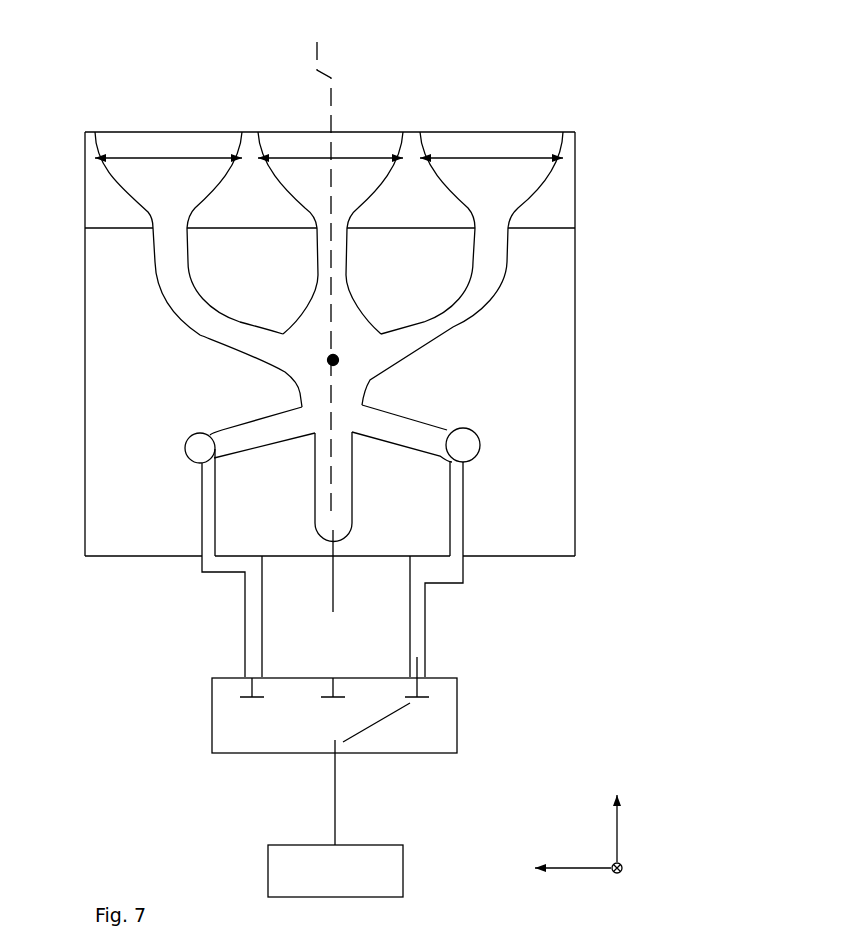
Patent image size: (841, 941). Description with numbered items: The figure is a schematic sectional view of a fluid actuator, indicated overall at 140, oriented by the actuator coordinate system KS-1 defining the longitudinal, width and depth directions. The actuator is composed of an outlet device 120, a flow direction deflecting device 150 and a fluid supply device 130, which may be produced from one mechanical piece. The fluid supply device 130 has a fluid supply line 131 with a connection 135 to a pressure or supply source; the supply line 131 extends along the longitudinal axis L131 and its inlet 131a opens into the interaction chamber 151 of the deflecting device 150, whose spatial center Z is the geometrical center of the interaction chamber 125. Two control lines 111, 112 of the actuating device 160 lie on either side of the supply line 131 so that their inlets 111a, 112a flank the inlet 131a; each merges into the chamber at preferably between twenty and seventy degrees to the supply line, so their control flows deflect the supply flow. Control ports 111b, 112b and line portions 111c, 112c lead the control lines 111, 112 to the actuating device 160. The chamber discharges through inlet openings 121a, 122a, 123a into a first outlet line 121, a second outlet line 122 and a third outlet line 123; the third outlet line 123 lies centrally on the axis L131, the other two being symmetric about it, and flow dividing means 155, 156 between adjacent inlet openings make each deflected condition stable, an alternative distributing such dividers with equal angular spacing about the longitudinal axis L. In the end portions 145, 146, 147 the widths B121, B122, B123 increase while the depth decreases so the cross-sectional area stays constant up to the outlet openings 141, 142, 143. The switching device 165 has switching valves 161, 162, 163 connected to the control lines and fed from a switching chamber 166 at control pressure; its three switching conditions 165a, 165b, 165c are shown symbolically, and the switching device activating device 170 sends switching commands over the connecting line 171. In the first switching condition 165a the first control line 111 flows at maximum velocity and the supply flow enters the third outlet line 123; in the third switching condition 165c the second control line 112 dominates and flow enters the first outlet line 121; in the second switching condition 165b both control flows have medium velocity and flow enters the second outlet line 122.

The first control line 111 is at (262, 423).
The inlet of the first control line 111a is at (294, 428).
The widened portion of first outlet channel 111b is at (186, 456).
The connecting channel of first outlet 111c is at (200, 565).
The second control line 112 is at (448, 423).
The inlet of the second control line 112a is at (367, 419).
The widened portion of second outlet channel 112b is at (468, 452).
The connecting channel of second outlet 112c is at (462, 578).
The outlet device 120 is at (540, 285).
The first outlet line 121 is at (208, 340).
The inlet opening of the first outlet line 121a is at (271, 340).
The second outlet line 122 is at (457, 322).
The inlet opening of the second outlet line 122a is at (323, 316).
The third outlet line 123 is at (322, 245).
The inlet opening of the third outlet line 123a is at (388, 340).
The interaction chamber 125 is at (342, 385).
The fluid supply device 130 is at (375, 507).
The fluid supply line 131 is at (338, 467).
The inlet of the fluid supply line 131a is at (316, 399).
The connection to a pressure or supply source 135 is at (330, 540).
The flow device 140 is at (587, 35).
The outlet opening 141 is at (135, 110).
The outlet opening 142 is at (363, 103).
The outlet opening 143 is at (501, 114).
The end portion of the outlet line 145 is at (200, 138).
The end portion of the outlet line 146 is at (305, 147).
The end portion of the outlet line 147 is at (532, 145).
The flow direction deflecting device 150 is at (562, 402).
The interaction chamber 151 is at (345, 313).
The flow dividing means 155 is at (293, 341).
The flow dividing means 156 is at (377, 335).
The actuating device 160 is at (485, 630).
The switching valve 161 is at (222, 703).
The switching valve 162 is at (320, 718).
The switching valve 163 is at (445, 695).
The switching device 165 is at (378, 738).
The first switching condition 165a is at (241, 688).
The second switching condition 165b is at (319, 690).
The third switching condition 165c is at (399, 688).
The switching chamber 166 is at (268, 745).
The switching device activating device 170 is at (335, 871).
The connecting line 171 is at (335, 793).
The width of the first outlet line B121 is at (175, 160).
The width of the second outlet line B122 is at (445, 160).
The width of the third outlet line B123 is at (303, 160).
The longitudinal axis L is at (321, 267).
The longitudinal axis L131 is at (338, 590).
The spatial center of the interaction chamber Z is at (338, 360).
The actuator coordinate system KS-1 is at (635, 805).